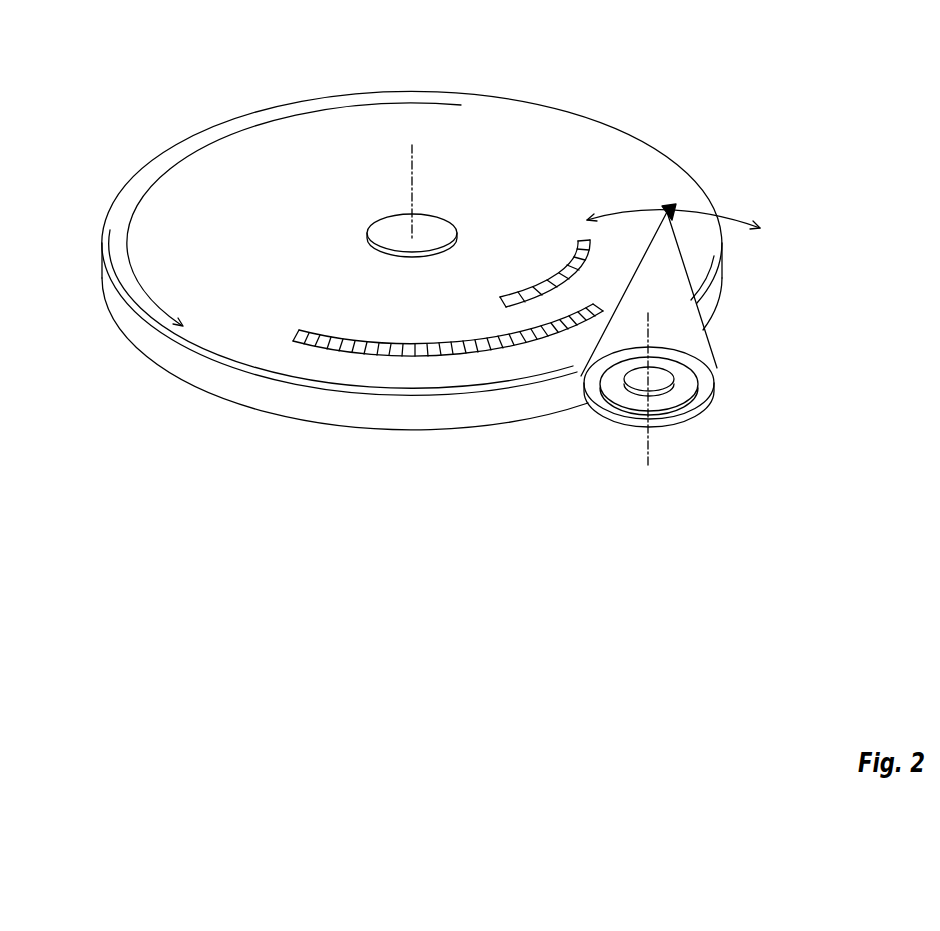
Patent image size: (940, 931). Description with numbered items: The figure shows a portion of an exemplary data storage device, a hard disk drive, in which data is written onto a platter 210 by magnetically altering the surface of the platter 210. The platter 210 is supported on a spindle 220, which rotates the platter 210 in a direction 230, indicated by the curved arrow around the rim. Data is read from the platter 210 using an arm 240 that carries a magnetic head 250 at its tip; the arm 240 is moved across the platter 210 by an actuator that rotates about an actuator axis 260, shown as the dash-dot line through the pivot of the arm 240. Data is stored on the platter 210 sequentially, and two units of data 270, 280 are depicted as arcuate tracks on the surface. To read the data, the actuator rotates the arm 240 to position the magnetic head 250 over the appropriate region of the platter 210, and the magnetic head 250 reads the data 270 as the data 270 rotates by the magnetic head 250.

The platter 210 is at (639, 50).
The spindle 220 is at (319, 173).
The direction 230 is at (162, 81).
The arm 240 is at (765, 288).
The magnetic head 250 is at (753, 153).
The actuator axis 260 is at (776, 446).
The data 270 is at (344, 286).
The data 280 is at (502, 206).